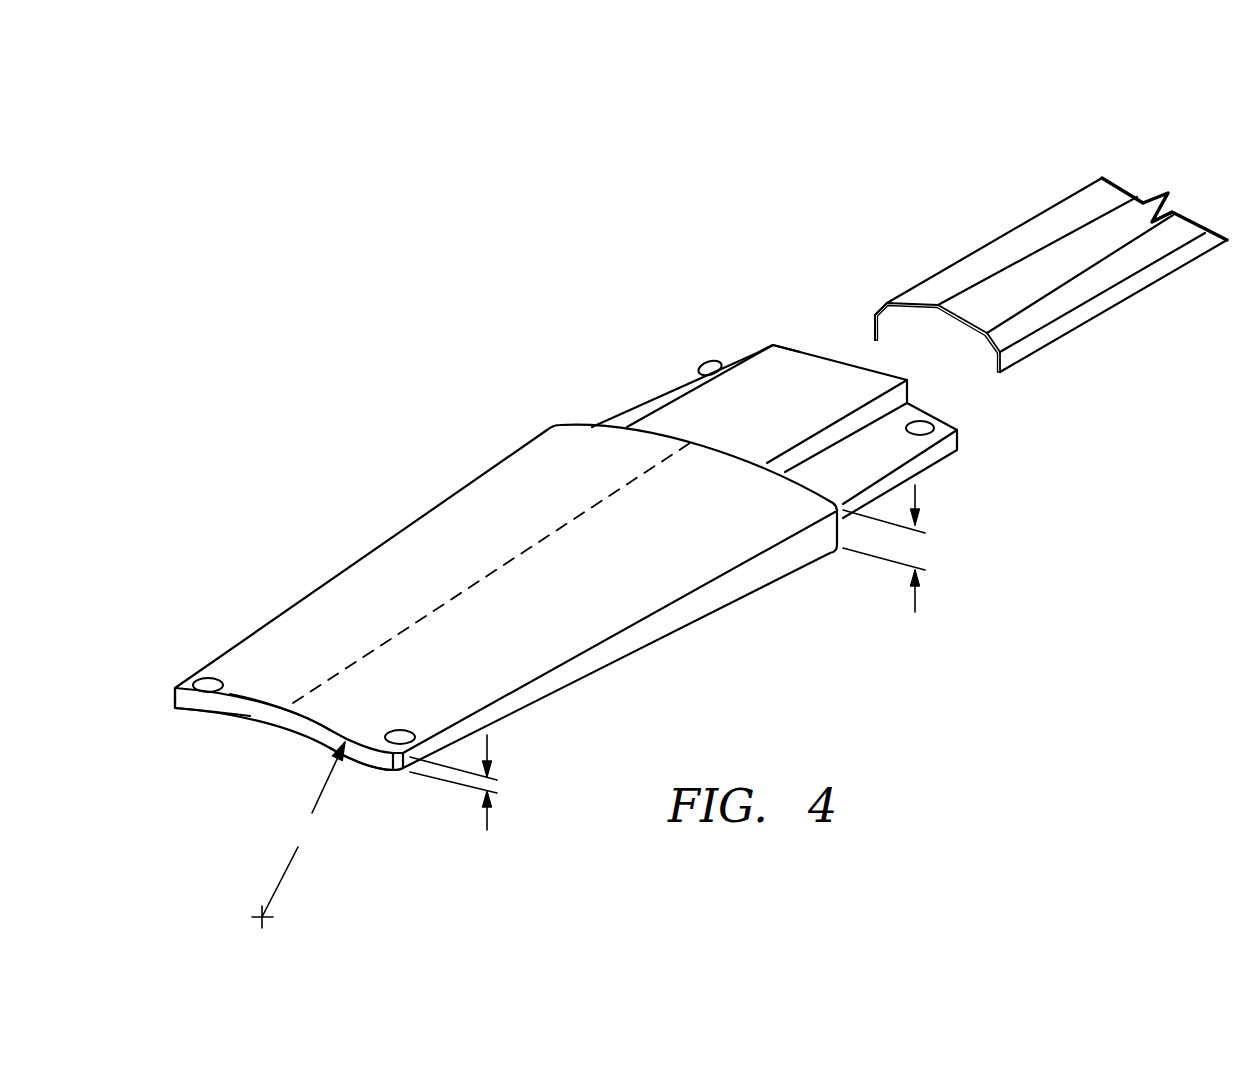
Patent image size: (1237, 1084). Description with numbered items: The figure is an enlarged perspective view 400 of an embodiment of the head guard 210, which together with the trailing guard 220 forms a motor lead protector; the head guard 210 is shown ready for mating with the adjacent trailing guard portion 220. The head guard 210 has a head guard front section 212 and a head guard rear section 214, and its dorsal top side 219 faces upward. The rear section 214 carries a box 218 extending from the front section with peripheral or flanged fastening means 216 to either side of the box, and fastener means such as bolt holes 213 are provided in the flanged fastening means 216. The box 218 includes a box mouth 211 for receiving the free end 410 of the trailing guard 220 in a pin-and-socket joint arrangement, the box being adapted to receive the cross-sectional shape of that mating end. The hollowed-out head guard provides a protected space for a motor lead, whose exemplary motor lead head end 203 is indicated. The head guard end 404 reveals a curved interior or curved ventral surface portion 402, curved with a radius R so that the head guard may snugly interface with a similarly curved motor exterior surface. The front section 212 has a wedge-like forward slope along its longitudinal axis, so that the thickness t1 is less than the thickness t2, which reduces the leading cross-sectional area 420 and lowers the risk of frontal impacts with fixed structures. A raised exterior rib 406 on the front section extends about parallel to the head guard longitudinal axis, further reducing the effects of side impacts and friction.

The enlarged perspective view 400 is at (452, 290).
The head guard 210 is at (802, 640).
The head guard front section 212 is at (352, 563).
The head guard rear section 214 is at (637, 393).
The flanged fastening means 216 is at (870, 458).
The box 218 is at (792, 415).
The dorsal top side 219 is at (682, 546).
The box mouth 211 is at (785, 347).
The bolt holes 213 is at (930, 427).
The motor lead head end 203 is at (405, 735).
The trailing guard 220 is at (1003, 235).
The free end of the trailing guard 410 is at (873, 328).
The curved ventral surface portion 402 is at (270, 720).
The head guard end 404 is at (365, 752).
The raised exterior rib 406 is at (533, 545).
The leading cross-sectional area 420 is at (207, 707).
The radius R is at (298, 835).
The front thickness t1 is at (469, 782).
The rear thickness t2 is at (884, 548).